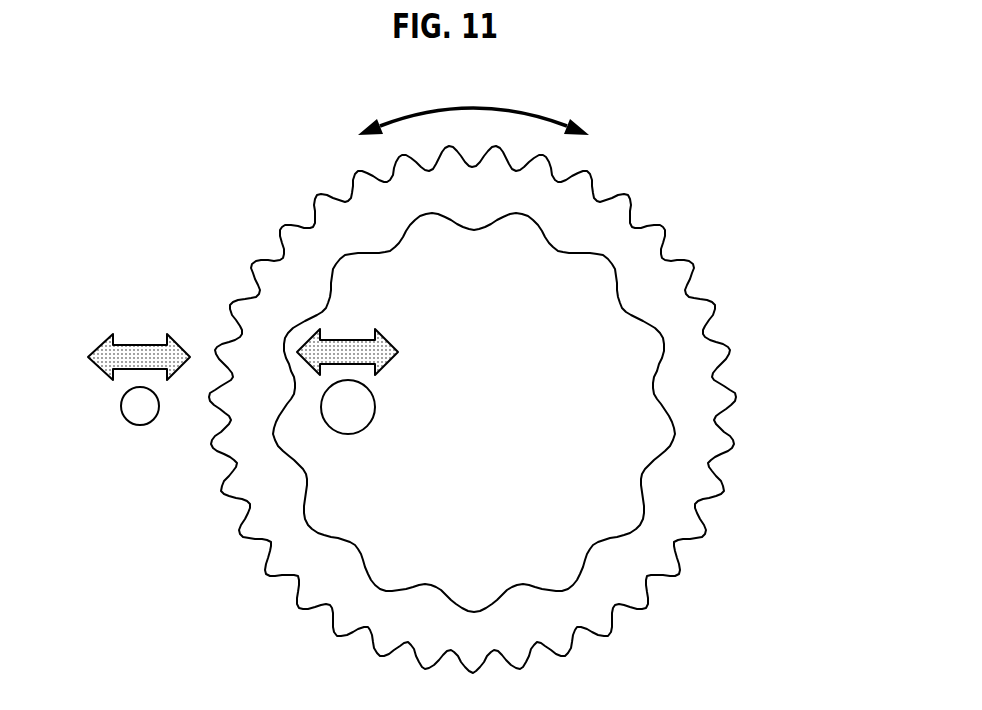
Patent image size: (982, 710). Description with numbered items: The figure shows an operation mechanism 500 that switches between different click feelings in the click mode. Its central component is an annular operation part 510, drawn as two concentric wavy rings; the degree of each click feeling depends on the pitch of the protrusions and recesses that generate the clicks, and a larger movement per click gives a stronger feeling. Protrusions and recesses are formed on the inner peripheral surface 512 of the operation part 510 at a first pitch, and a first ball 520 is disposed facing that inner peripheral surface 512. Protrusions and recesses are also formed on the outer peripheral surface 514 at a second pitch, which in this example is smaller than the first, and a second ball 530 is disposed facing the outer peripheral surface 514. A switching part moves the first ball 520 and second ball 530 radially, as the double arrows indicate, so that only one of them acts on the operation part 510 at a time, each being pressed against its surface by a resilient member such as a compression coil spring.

The operation mechanism 500 is at (716, 152).
The operation part 510 is at (498, 409).
The inner peripheral surface 512 is at (660, 418).
The outer peripheral surface 514 is at (300, 590).
The first ball 520 is at (375, 407).
The second ball 530 is at (140, 425).